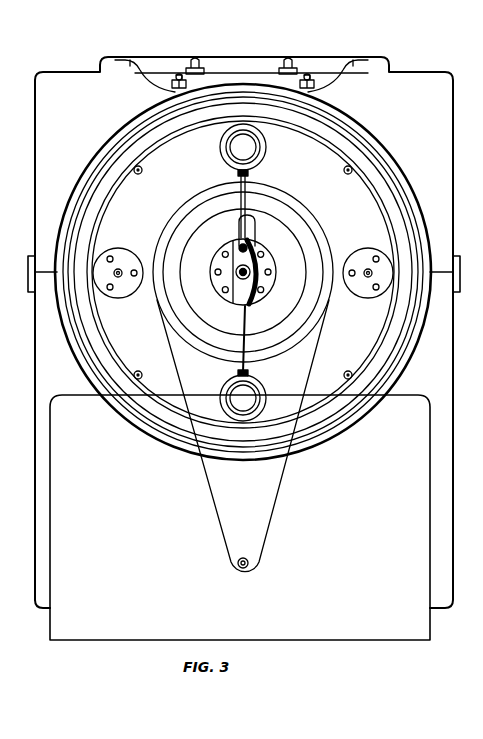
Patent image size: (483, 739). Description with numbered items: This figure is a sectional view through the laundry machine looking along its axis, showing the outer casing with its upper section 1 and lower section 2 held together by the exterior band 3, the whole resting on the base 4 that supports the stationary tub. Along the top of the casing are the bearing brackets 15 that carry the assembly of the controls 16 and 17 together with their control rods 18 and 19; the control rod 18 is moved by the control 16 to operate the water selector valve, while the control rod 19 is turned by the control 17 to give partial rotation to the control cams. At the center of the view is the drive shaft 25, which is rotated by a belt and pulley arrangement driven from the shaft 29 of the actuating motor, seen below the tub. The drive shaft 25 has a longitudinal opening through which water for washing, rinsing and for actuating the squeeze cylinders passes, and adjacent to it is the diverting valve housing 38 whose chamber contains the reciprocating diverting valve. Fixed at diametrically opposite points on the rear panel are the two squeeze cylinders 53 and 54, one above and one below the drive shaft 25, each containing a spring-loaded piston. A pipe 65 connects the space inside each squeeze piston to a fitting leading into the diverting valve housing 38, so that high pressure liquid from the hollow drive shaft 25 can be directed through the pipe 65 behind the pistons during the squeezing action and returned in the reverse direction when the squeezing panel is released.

The upper section 1 is at (35, 124).
The lower section 2 is at (35, 348).
The exterior band 3 is at (28, 272).
The base 4 is at (60, 466).
The bearing brackets 15 is at (133, 64).
The control 16 is at (195, 60).
The control 17 is at (288, 60).
The control rod 18 is at (177, 76).
The control rod 19 is at (308, 76).
The drive shaft 25 is at (240, 270).
The shaft 29 is at (249, 566).
The diverting valve housing 38 is at (268, 256).
The squeeze cylinder 53 is at (252, 147).
The squeeze cylinder 54 is at (236, 396).
The pipe 65 is at (240, 196).